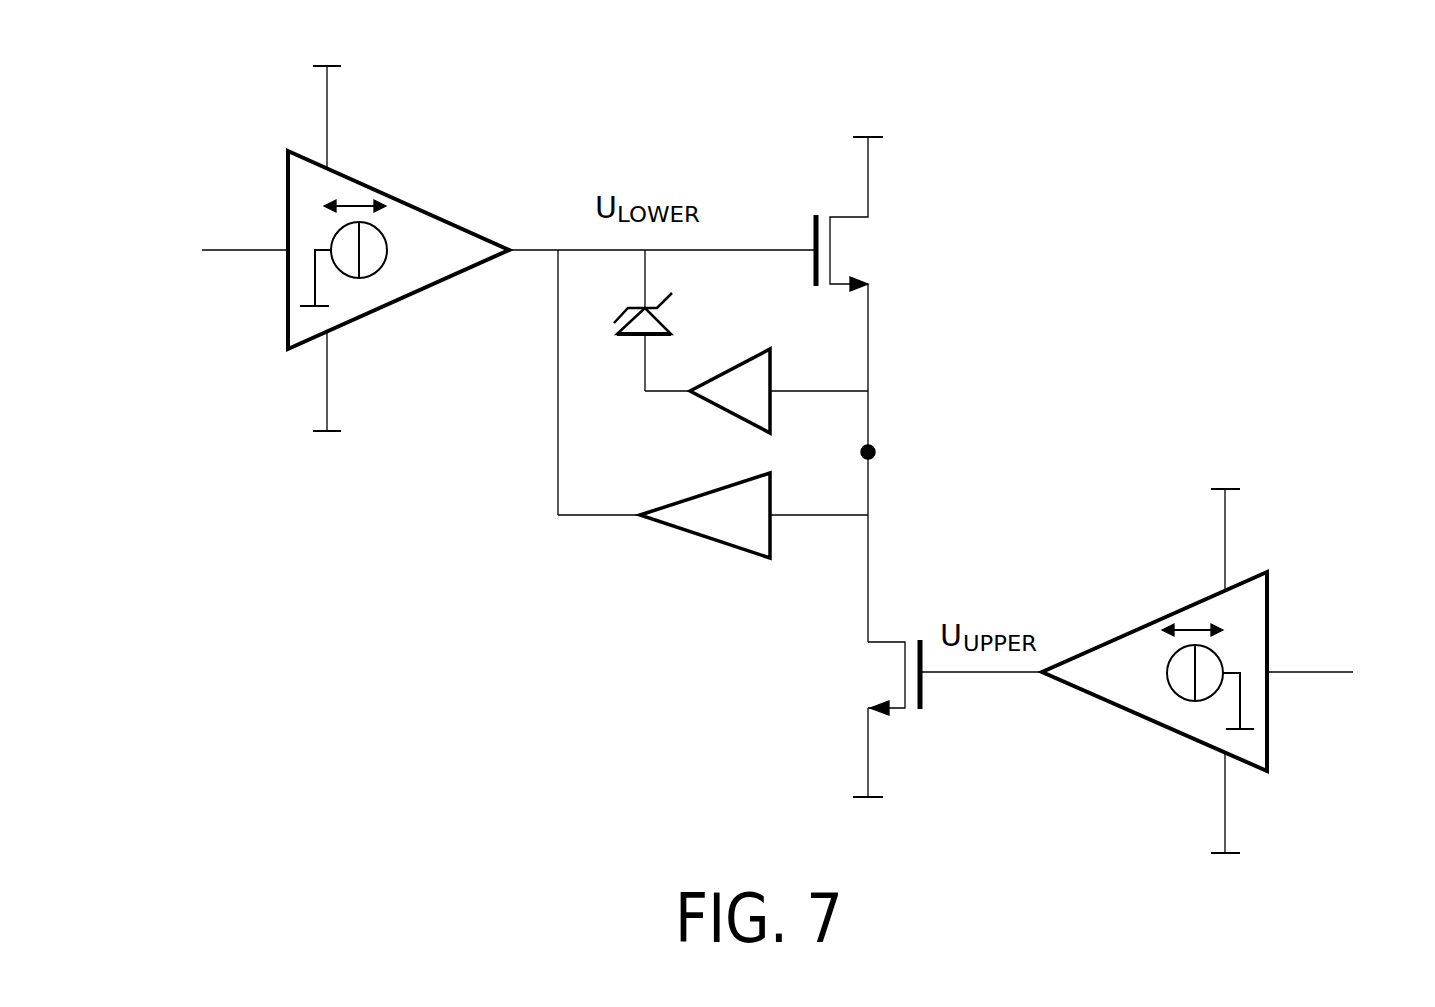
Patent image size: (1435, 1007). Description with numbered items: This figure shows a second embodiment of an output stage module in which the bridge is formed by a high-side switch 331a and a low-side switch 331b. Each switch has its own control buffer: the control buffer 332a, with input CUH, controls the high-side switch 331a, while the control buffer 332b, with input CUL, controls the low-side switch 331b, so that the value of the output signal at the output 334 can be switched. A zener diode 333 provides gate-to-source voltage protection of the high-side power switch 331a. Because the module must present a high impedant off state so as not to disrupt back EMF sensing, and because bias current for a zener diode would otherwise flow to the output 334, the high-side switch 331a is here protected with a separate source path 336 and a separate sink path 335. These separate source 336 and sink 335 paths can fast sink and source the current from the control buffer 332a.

The high-side switch 331a is at (816, 216).
The low-side switch 331b is at (922, 709).
The control buffer 332a is at (402, 199).
The control buffer 332b is at (1181, 608).
The zener diode 333 is at (625, 340).
The output 334 is at (877, 450).
The sink path 335 is at (730, 413).
The source path 336 is at (703, 537).